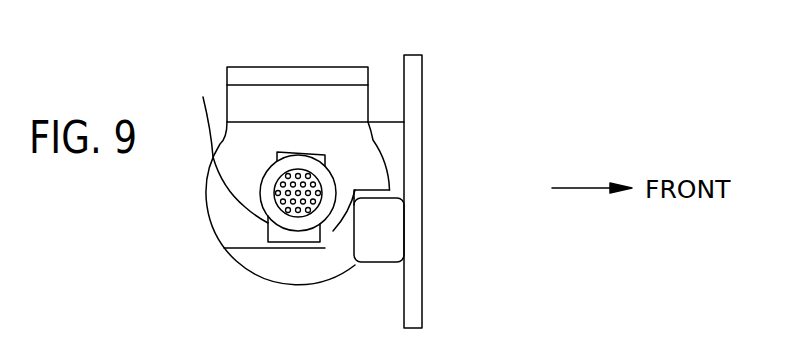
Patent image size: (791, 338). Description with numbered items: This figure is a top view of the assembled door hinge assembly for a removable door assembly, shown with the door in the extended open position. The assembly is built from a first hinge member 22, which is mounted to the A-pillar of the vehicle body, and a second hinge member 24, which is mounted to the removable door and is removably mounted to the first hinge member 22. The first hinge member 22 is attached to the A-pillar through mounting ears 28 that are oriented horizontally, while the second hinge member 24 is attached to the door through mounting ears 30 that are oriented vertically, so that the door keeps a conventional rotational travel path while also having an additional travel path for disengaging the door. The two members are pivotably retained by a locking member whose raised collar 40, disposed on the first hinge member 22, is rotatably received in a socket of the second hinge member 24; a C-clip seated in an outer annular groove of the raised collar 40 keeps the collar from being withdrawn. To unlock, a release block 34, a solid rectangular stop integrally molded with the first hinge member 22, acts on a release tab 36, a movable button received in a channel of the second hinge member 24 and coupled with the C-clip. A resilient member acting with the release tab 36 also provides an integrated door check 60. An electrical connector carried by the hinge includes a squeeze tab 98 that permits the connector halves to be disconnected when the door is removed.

The first hinge member 22 is at (393, 142).
The second hinge member 24 is at (220, 210).
The mounting ears 28 is at (415, 258).
The mounting ears 30 is at (302, 70).
The release block 34 is at (397, 220).
The release tab 36 is at (365, 200).
The raised collar 40 is at (290, 227).
The door check 60 is at (391, 191).
The squeeze tab 98 is at (305, 152).